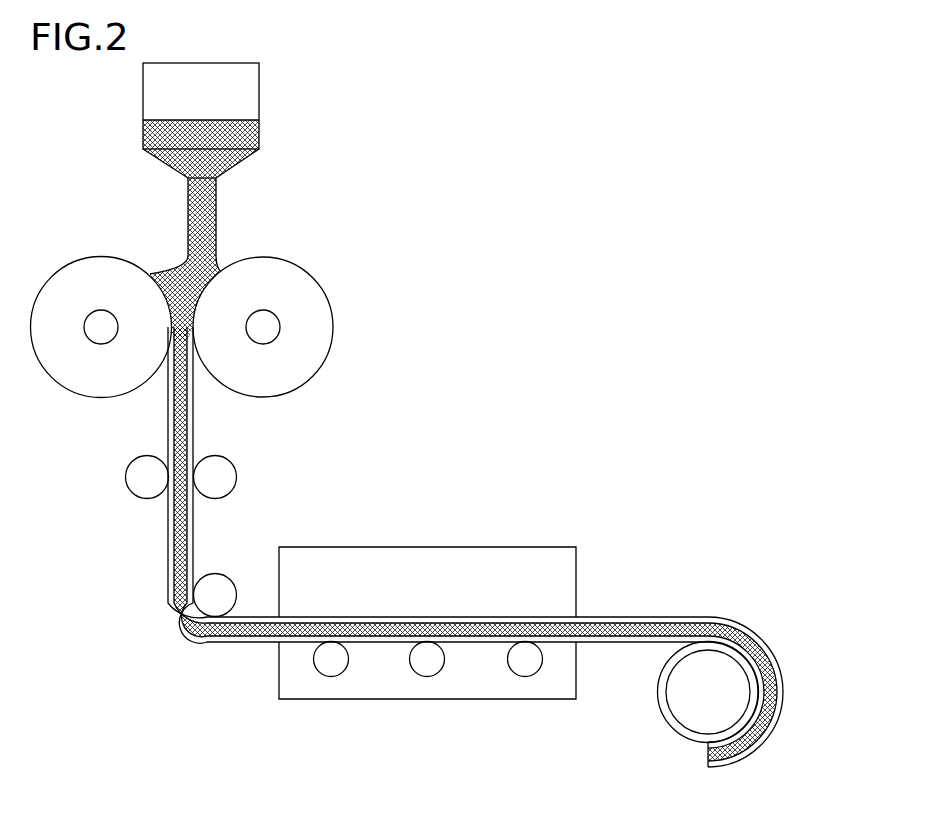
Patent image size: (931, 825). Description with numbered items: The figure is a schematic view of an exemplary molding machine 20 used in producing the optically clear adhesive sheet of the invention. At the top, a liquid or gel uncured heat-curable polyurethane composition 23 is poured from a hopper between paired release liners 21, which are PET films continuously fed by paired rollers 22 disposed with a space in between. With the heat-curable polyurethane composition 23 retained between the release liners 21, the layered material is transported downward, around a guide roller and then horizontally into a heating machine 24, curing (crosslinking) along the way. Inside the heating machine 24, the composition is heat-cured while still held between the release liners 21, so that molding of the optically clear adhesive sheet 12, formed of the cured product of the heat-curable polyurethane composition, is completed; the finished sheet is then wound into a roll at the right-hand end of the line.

The molding machine 20 is at (446, 173).
The heat-curable polyurethane composition 23 is at (245, 136).
The paired rollers 22 is at (100, 257).
The release liners 21 is at (614, 643).
The heating machine 24 is at (484, 553).
The optically clear adhesive sheet 12 is at (777, 681).